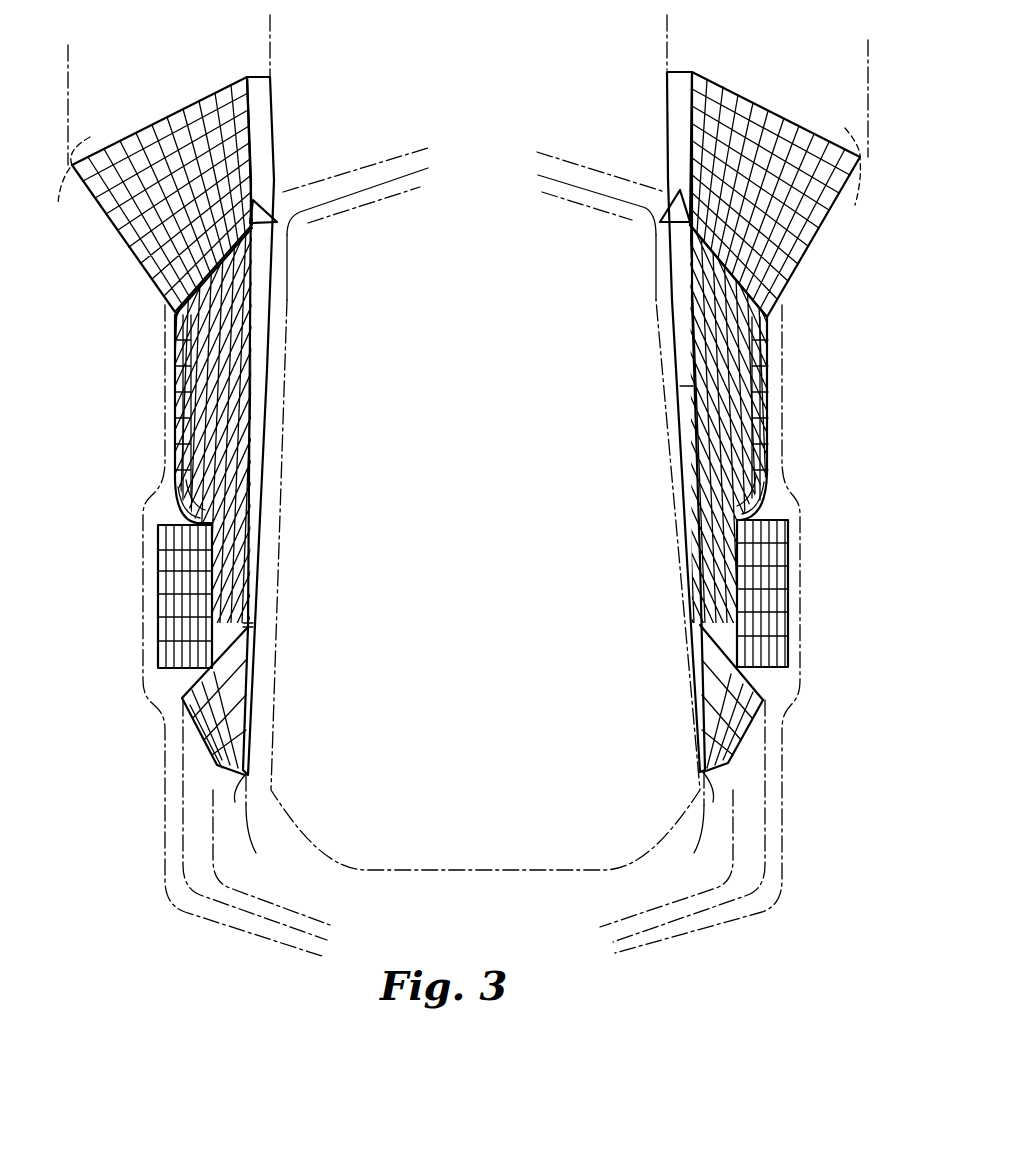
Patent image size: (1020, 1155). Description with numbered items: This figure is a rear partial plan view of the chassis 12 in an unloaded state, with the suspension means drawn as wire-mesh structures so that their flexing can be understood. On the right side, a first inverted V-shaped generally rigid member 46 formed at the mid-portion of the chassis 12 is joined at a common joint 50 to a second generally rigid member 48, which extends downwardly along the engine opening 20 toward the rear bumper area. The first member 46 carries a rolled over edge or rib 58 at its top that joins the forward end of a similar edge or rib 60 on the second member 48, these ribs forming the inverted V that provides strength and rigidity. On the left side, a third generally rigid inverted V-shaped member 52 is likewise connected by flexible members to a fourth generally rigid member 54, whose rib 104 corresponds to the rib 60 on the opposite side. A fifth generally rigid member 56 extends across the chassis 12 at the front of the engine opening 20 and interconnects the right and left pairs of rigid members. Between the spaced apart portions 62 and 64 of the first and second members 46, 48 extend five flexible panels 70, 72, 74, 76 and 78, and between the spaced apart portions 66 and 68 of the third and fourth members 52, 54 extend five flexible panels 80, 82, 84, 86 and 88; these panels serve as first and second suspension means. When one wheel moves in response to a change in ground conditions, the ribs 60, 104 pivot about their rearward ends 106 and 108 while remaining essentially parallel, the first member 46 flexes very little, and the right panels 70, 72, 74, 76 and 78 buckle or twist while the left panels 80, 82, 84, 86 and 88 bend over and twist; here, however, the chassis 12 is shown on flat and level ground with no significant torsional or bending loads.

The chassis 12 is at (588, 940).
The engine opening 20 is at (487, 766).
The first inverted V-shaped generally rigid member 46 is at (772, 63).
The second generally rigid member 48 is at (690, 605).
The common joint 50 is at (665, 198).
The third generally rigid inverted V-shaped member 52 is at (184, 41).
The fourth generally rigid member 54 is at (262, 605).
The fifth generally rigid member 56 is at (388, 175).
The rolled over edge or rib 58 is at (675, 107).
The edge or rib 60 is at (692, 532).
The spaced apart portion 62 is at (855, 181).
The spaced apart portion 64 is at (742, 763).
The spaced apart portion 66 is at (69, 187).
The spaced apart portion 68 is at (195, 745).
The flexible panel 70 is at (787, 237).
The flexible panel 72 is at (763, 383).
The flexible panel 74 is at (755, 492).
The flexible panel 76 is at (720, 582).
The flexible panel 78 is at (755, 716).
The flexible panel 80 is at (153, 247).
The flexible panel 82 is at (176, 368).
The flexible panel 84 is at (185, 503).
The flexible panel 86 is at (215, 598).
The flexible panel 88 is at (196, 728).
The rib or edge 104 is at (250, 553).
The rearward end 106 is at (712, 780).
The rearward end 108 is at (240, 798).